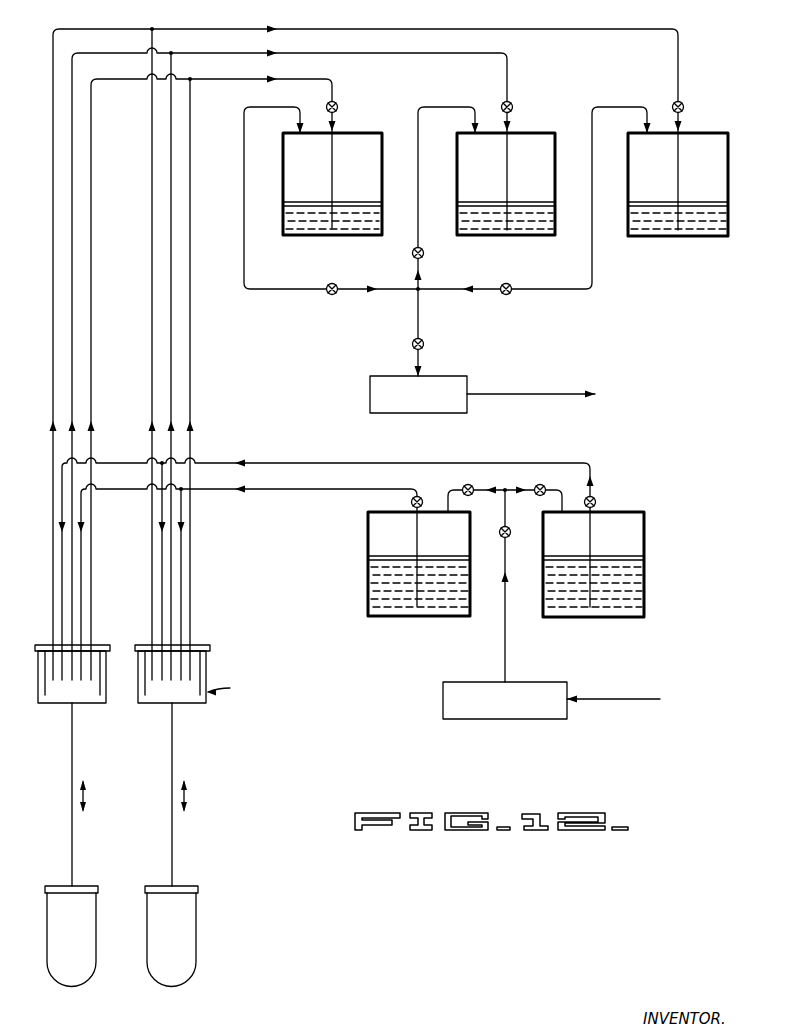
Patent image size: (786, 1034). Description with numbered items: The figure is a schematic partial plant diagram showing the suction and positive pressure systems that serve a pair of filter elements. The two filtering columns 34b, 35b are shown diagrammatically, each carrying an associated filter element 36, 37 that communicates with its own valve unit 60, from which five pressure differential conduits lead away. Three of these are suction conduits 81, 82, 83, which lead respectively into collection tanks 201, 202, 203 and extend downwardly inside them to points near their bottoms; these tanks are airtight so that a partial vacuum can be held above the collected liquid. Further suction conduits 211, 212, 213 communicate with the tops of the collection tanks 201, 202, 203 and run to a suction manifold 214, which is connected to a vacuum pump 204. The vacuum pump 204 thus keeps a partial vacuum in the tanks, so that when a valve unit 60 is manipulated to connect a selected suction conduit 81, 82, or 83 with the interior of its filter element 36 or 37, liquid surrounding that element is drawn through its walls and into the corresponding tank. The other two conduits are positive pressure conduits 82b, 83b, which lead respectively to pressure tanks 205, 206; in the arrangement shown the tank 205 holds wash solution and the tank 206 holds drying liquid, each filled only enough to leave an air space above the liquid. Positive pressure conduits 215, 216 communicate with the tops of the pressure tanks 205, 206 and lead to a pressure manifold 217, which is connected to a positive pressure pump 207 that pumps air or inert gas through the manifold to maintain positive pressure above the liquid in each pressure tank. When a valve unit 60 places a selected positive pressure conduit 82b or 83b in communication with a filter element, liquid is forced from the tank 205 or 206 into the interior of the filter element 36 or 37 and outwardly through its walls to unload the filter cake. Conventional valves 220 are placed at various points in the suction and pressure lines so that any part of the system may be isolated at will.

The suction conduit 81 is at (53, 336).
The suction conduit 82 is at (72, 364).
The suction conduit 83 is at (91, 390).
The positive pressure conduit 82b is at (62, 491).
The positive pressure conduit 83b is at (81, 557).
The valve unit 60 is at (37, 685).
The filtering column 34b is at (70, 740).
The filtering column 35b is at (174, 740).
The filter element 36 is at (75, 988).
The filter element 37 is at (175, 988).
The collection tank 201 is at (628, 160).
The collection tank 202 is at (457, 160).
The collection tank 203 is at (283, 160).
The vacuum pump 204 is at (418, 413).
The pressure tank 205 is at (644, 538).
The pressure tank 206 is at (368, 533).
The positive pressure pump 207 is at (516, 719).
The suction conduit 211 is at (592, 119).
The suction conduit 212 is at (418, 119).
The suction conduit 213 is at (244, 119).
The suction manifold 214 is at (424, 313).
The positive pressure conduit 215 is at (511, 492).
The positive pressure conduit 216 is at (497, 492).
The pressure manifold 217 is at (506, 652).
The valve 220 is at (337, 104).